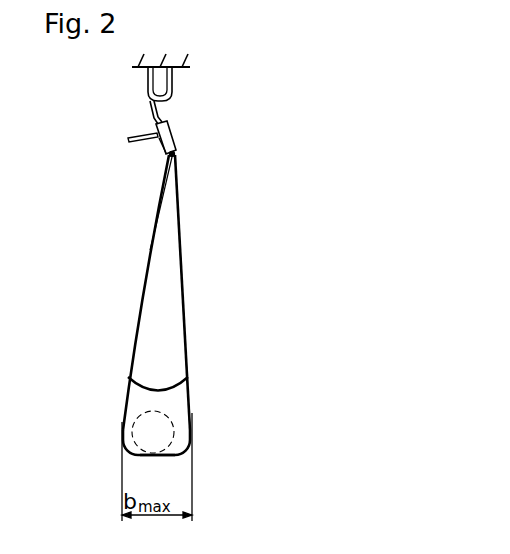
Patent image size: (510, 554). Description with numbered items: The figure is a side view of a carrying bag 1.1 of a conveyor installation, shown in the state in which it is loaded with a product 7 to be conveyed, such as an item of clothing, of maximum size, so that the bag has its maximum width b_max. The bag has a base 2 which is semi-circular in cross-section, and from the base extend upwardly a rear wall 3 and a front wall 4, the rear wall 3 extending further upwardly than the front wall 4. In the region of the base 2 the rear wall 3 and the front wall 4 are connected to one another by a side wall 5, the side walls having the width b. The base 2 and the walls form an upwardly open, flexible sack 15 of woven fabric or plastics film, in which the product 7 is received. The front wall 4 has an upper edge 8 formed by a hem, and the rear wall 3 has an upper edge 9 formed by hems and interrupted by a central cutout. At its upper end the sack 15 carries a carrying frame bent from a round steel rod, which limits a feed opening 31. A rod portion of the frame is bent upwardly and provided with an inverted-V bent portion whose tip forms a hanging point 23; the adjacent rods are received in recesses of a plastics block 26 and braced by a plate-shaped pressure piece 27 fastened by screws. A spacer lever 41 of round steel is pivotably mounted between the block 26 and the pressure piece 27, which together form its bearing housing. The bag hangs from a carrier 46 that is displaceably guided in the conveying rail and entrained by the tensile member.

The carrier 46 is at (172, 83).
The hanging point 23 is at (147, 80).
The pressure piece 27 is at (171, 138).
The spacer lever 41 is at (127, 138).
The block 26 is at (159, 143).
The upper edge 9 is at (176, 154).
The carrying bag 1.1 is at (165, 325).
The front wall 4 is at (136, 335).
The rear wall 3 is at (181, 330).
The product to be conveyed 7 is at (132, 421).
The base 2 is at (170, 457).
The sack 15 is at (189, 362).
The side wall 5 is at (178, 411).
The feed opening 31 is at (158, 192).
The upper edge 8 is at (152, 218).